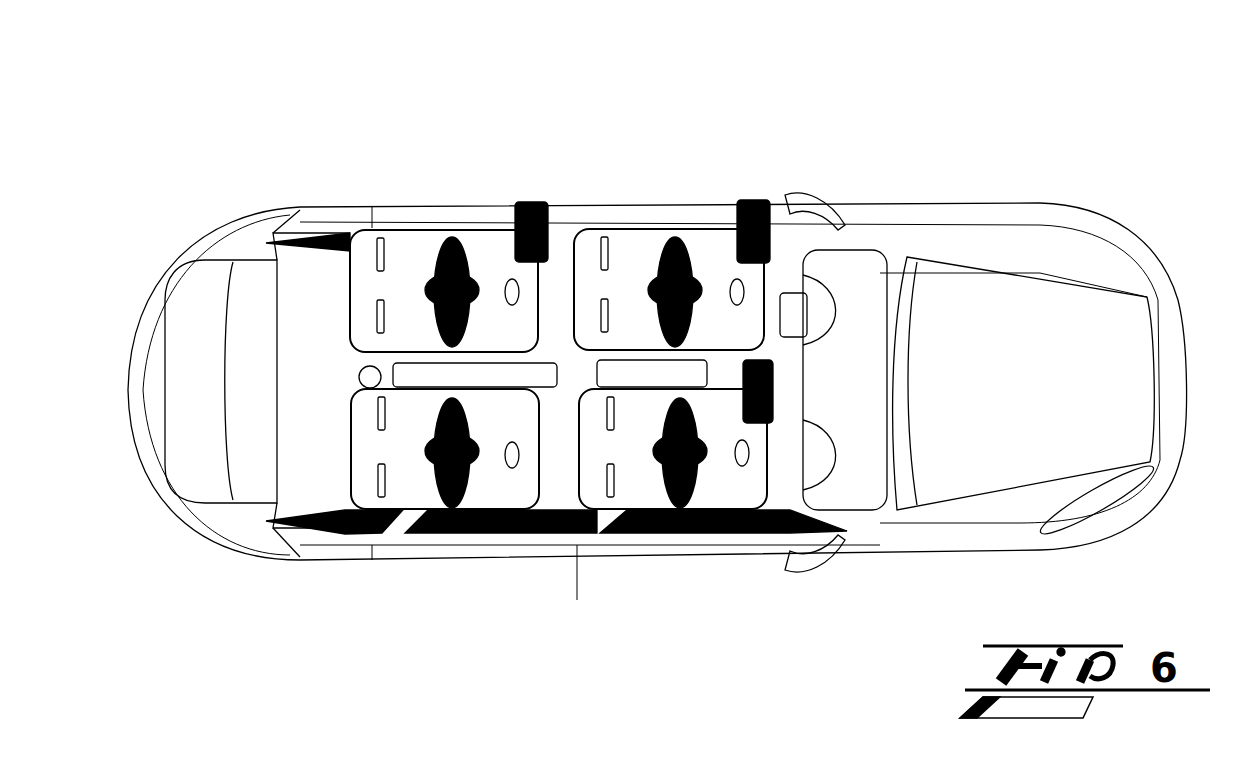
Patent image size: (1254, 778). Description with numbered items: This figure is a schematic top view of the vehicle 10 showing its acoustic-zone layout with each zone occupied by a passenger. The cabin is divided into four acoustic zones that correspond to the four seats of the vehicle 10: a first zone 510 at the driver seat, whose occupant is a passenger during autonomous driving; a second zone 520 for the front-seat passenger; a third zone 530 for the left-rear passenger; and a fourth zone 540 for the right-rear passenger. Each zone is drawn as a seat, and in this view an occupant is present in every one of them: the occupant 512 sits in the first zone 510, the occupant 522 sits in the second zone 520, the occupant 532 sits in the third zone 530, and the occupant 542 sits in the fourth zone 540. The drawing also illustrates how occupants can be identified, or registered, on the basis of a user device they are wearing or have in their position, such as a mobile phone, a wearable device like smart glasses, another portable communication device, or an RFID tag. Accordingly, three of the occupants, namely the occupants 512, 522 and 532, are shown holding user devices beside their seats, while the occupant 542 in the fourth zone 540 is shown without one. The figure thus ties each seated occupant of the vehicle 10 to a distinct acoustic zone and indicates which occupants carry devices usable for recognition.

The vehicle 10 is at (1004, 398).
The first zone 510 is at (707, 236).
The occupant 512 is at (660, 257).
The second zone 520 is at (716, 500).
The occupant 522 is at (660, 482).
The third zone 530 is at (479, 237).
The occupant 532 is at (433, 258).
The fourth zone 540 is at (489, 497).
The occupant 542 is at (437, 462).